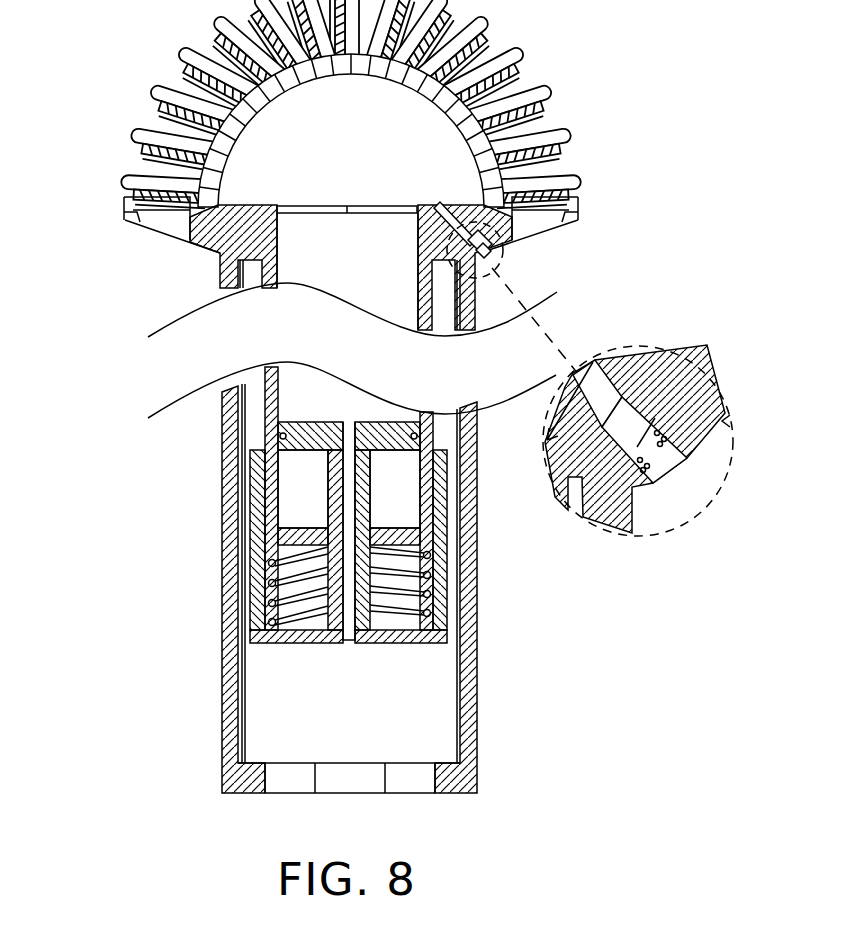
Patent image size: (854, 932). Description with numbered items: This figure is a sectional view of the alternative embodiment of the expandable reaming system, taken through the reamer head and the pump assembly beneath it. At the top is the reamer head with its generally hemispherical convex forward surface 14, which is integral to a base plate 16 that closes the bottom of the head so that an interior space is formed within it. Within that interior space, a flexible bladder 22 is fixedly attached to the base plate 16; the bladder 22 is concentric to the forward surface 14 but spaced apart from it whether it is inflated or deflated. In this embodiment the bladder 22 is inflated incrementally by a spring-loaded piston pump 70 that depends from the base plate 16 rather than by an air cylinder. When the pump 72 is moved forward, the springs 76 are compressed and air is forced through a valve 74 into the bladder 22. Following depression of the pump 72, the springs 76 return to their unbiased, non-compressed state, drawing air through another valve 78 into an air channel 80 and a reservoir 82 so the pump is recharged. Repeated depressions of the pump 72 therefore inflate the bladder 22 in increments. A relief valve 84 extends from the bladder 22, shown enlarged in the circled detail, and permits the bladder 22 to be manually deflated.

The forward surface 14 is at (140, 114).
The bladder 22 is at (548, 117).
The reservoir 82 is at (303, 227).
The valve 74 is at (365, 213).
The base plate 16 is at (212, 255).
The air channel 80 is at (348, 427).
The relief valve 84 is at (683, 370).
The springs 76 is at (278, 557).
The pump 72 is at (447, 597).
The spring-loaded piston pump 70 is at (270, 678).
The valve 78 is at (347, 643).